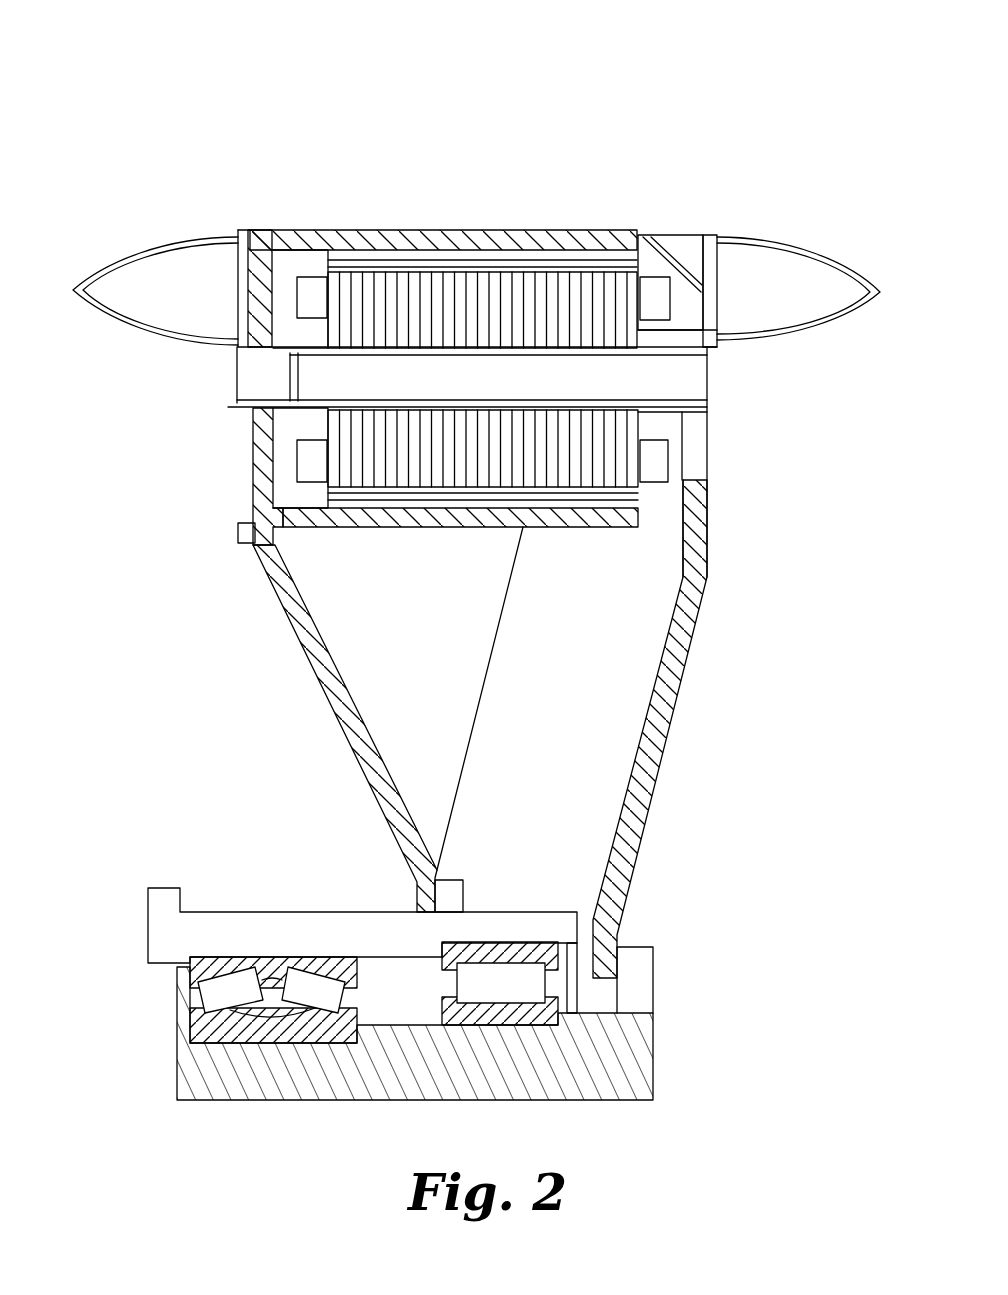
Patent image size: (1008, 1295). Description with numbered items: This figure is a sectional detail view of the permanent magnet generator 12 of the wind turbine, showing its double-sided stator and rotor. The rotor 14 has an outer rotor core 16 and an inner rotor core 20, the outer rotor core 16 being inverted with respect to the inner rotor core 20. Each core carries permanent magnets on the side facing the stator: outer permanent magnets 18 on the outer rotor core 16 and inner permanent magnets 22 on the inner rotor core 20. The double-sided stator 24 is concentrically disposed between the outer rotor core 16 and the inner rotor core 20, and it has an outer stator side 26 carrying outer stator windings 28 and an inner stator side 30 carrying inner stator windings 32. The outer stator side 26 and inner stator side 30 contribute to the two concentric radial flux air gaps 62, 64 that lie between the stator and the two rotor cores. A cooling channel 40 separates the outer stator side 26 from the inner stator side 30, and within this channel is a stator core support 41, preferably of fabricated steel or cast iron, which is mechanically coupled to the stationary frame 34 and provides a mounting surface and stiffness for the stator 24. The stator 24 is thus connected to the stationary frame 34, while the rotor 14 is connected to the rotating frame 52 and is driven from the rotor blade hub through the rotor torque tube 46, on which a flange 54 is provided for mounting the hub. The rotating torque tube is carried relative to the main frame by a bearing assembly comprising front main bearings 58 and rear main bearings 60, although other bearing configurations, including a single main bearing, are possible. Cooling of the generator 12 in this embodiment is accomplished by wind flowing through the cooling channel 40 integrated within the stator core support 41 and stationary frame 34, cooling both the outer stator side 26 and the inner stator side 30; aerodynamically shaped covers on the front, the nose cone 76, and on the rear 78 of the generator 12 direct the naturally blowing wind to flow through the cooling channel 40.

The generator 12 is at (796, 152).
The rotor 14 is at (270, 238).
The outer rotor core 16 is at (587, 240).
The outer permanent magnets 18 is at (522, 257).
The inner rotor core 20 is at (590, 517).
The inner permanent magnets 22 is at (463, 495).
The double-sided stator 24 is at (683, 294).
The outer stator side 26 is at (745, 338).
The outer stator windings 28 is at (654, 283).
The inner stator side 30 is at (645, 425).
The inner stator windings 32 is at (663, 472).
The stationary frame 34 is at (658, 790).
The cooling channel 40 is at (678, 393).
The stator core support 41 is at (388, 363).
The rotor torque tube 46 is at (292, 925).
The rotating frame 52 is at (358, 767).
The flange 54 is at (148, 913).
The front main bearings 58 is at (307, 995).
The rear main bearings 60 is at (533, 985).
The radial flux air gap 62 is at (477, 266).
The radial flux air gap 64 is at (377, 497).
The front cover (nose cone) 76 is at (120, 283).
The rear cover 78 is at (840, 283).